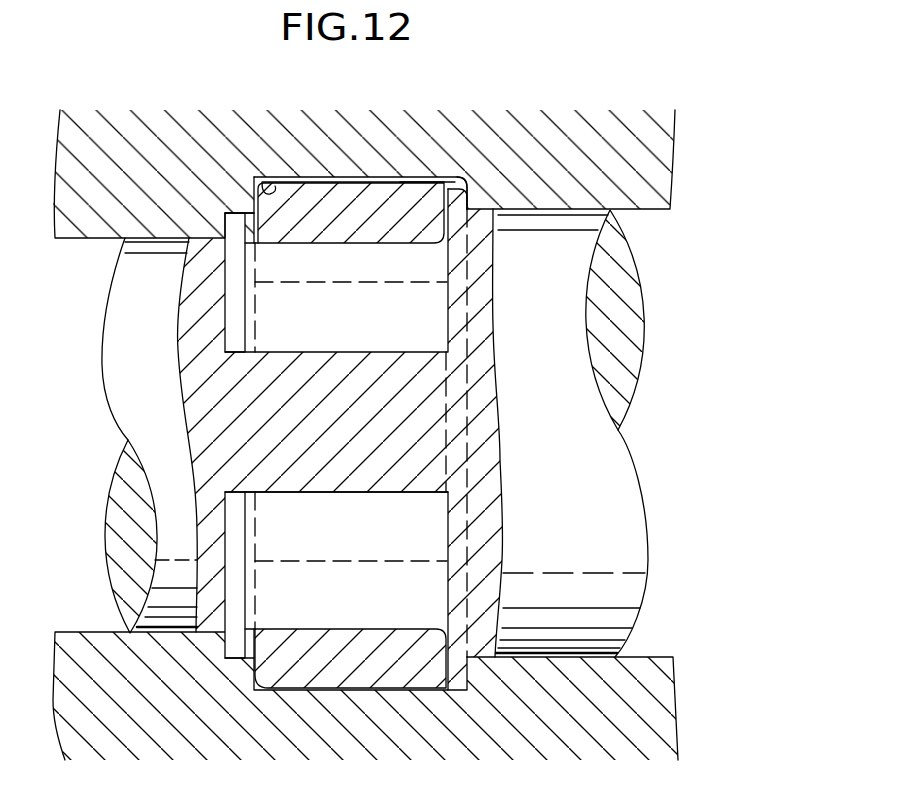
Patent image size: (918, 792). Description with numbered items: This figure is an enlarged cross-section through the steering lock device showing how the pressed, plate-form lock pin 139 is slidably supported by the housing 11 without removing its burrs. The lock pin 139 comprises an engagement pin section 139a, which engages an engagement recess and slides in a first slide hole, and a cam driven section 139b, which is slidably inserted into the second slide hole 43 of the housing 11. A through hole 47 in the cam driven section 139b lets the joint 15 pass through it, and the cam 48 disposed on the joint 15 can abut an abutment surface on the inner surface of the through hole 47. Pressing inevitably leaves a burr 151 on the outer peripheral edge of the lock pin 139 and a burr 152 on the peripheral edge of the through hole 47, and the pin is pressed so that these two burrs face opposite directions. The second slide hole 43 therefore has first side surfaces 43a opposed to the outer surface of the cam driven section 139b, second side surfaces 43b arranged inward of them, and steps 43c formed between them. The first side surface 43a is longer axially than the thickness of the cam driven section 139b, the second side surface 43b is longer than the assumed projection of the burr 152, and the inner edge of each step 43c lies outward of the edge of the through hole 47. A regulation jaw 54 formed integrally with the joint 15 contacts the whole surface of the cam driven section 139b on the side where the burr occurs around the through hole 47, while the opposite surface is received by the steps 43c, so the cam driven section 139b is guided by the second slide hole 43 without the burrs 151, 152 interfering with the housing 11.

The housing 11 is at (622, 138).
The joint 15 is at (634, 427).
The second slide hole 43 is at (371, 195).
The first side surface 43a is at (262, 182).
The second side surface 43b is at (238, 220).
The step 43c is at (258, 198).
The through hole 47 is at (403, 245).
The cam 48 is at (322, 492).
The regulation jaw 54 is at (483, 628).
The lock pin 139 is at (286, 170).
The engagement pin section 139a is at (400, 565).
The cam driven section 139b is at (412, 190).
The burr 151 is at (473, 182).
The burr 152 is at (224, 250).